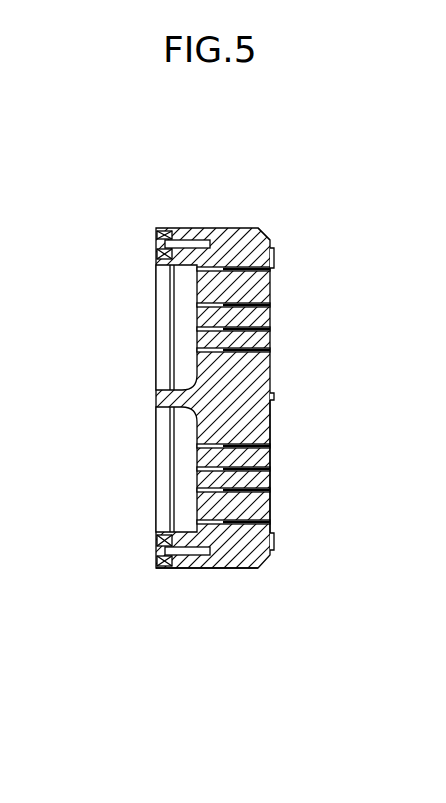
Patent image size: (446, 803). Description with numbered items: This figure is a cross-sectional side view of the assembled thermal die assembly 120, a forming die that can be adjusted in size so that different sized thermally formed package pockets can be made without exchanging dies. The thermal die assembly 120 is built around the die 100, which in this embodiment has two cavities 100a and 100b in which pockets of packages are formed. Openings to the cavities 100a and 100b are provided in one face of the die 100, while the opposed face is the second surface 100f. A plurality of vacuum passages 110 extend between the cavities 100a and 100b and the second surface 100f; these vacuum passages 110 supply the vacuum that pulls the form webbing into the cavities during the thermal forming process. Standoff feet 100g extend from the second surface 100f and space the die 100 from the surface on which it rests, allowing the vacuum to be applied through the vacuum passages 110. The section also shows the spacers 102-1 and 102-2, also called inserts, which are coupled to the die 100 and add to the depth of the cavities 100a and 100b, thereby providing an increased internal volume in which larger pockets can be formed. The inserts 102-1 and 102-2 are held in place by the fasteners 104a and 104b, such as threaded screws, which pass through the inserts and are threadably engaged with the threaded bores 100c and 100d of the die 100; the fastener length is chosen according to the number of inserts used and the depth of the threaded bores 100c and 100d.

The die 100 is at (220, 228).
The cavity 100a is at (183, 323).
The cavity 100b is at (183, 470).
The threaded bore 100c is at (266, 234).
The threaded bore 100d is at (205, 560).
The second surface 100f is at (271, 425).
The standoff feet 100g is at (274, 258).
The spacer 102-1 is at (172, 228).
The spacer 102-2 is at (162, 568).
The fastener 104a is at (157, 243).
The fastener 104b is at (157, 548).
The vacuum passages 110 is at (255, 305).
The thermal die assembly 120 is at (308, 198).